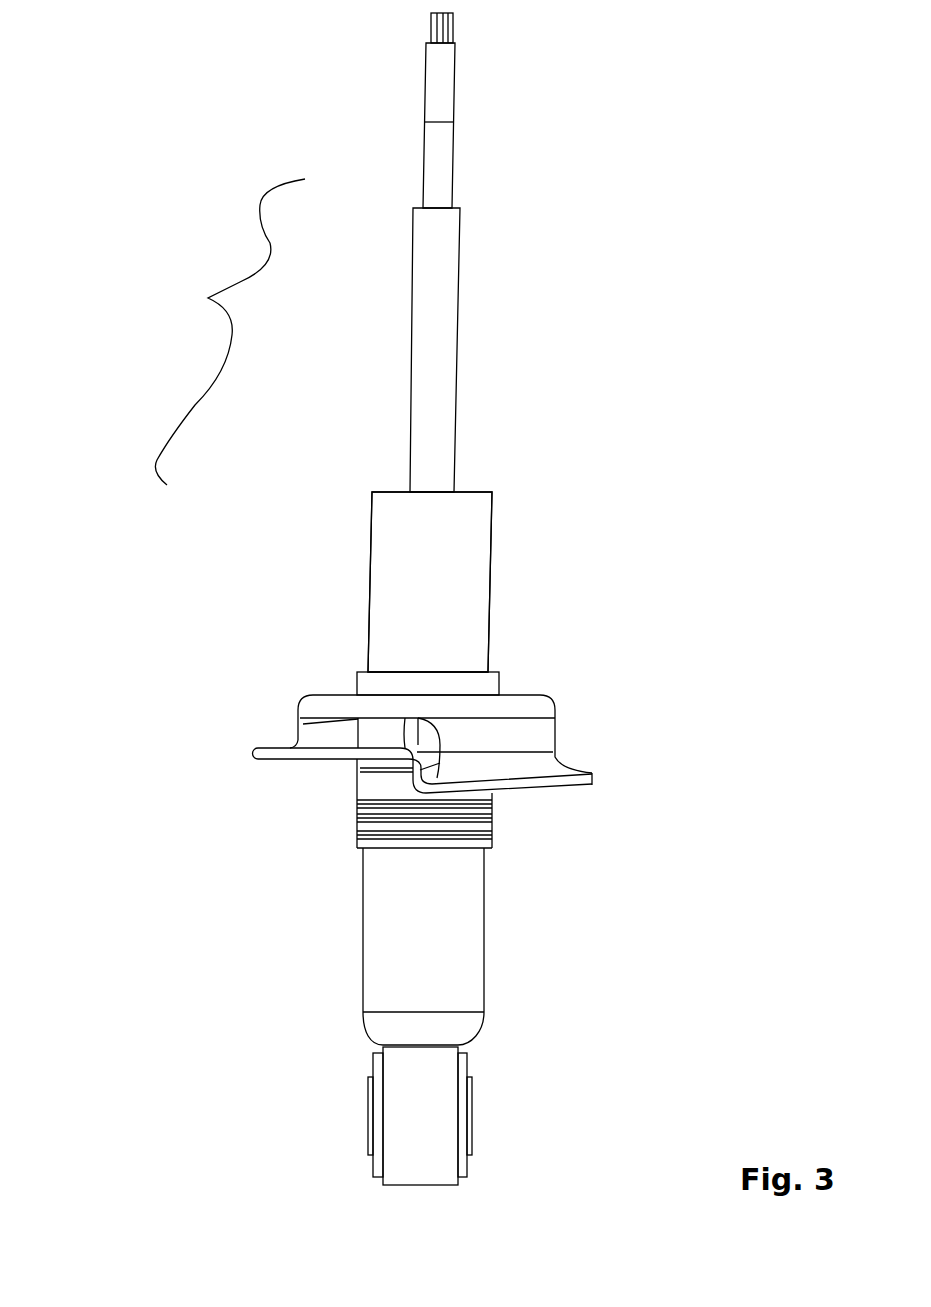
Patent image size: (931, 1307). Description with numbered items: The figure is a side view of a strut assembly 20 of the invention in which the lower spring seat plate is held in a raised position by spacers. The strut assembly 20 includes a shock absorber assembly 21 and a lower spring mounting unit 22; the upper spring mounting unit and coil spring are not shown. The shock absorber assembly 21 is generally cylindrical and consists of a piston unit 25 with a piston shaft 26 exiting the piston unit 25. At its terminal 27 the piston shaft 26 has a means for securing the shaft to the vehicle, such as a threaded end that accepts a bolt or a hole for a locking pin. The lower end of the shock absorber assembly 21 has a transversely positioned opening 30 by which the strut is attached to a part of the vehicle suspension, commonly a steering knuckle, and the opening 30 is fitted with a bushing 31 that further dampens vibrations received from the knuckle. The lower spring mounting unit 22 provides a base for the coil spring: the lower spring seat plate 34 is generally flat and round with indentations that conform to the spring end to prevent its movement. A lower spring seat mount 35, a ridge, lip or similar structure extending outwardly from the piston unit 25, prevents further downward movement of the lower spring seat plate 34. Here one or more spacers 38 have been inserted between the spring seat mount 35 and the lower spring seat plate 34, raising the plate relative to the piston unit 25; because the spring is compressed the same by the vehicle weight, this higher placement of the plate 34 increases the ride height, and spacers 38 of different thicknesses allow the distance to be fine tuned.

The strut assembly 20 is at (208, 298).
The shock absorber assembly 21 is at (467, 538).
The lower spring mounting unit 22 is at (537, 712).
The piston unit 25 is at (472, 613).
The piston shaft 26 is at (442, 176).
The terminal 27 is at (453, 24).
The transversely positioned opening 30 is at (445, 1060).
The bushing 31 is at (468, 1100).
The lower spring seat plate 34 is at (542, 740).
The lower spring seat mount 35 is at (455, 843).
The spacers 38 is at (368, 760).